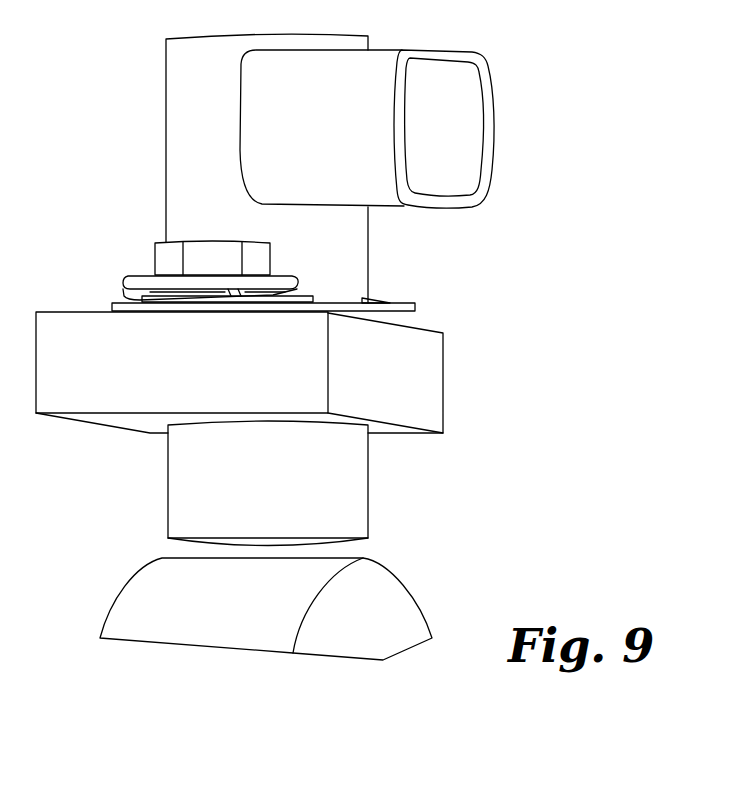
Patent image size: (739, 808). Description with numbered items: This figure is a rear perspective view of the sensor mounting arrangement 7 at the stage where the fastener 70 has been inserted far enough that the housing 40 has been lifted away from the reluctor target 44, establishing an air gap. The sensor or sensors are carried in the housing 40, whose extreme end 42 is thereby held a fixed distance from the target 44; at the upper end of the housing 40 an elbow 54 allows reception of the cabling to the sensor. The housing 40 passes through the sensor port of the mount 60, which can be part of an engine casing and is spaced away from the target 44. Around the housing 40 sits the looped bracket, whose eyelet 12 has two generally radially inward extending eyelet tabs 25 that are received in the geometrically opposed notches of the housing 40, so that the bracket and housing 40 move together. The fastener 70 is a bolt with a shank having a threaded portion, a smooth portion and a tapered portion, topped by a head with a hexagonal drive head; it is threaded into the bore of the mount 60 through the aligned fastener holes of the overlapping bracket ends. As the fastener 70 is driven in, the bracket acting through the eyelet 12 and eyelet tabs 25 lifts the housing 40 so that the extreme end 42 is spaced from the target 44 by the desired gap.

The arrangement 7 is at (143, 222).
The eyelet 12 is at (378, 313).
The eyelet tabs 25 is at (378, 300).
The housing 40 is at (368, 243).
The extreme end 42 is at (190, 543).
The reluctor target 44 is at (410, 591).
The elbow 54 is at (440, 50).
The mount 60 is at (443, 379).
The fastener 70 is at (157, 257).